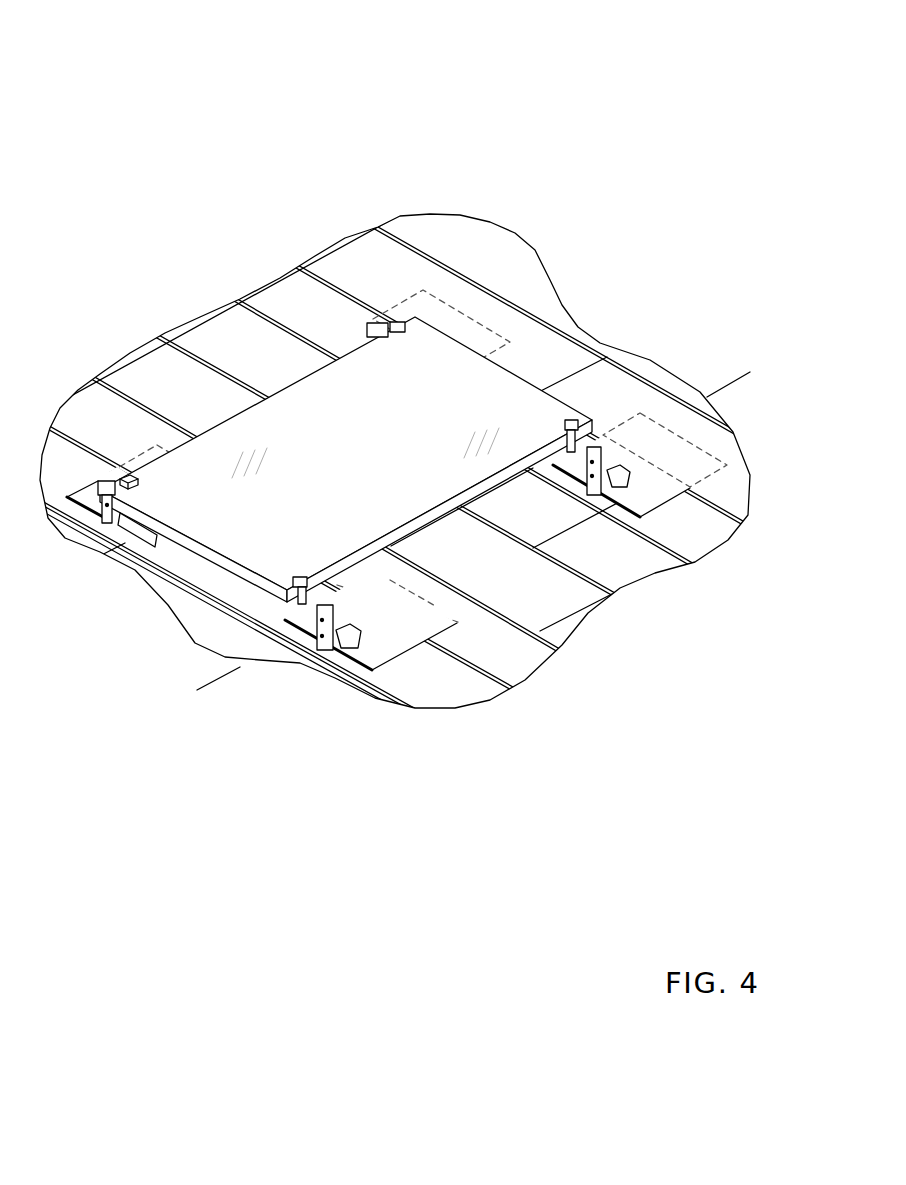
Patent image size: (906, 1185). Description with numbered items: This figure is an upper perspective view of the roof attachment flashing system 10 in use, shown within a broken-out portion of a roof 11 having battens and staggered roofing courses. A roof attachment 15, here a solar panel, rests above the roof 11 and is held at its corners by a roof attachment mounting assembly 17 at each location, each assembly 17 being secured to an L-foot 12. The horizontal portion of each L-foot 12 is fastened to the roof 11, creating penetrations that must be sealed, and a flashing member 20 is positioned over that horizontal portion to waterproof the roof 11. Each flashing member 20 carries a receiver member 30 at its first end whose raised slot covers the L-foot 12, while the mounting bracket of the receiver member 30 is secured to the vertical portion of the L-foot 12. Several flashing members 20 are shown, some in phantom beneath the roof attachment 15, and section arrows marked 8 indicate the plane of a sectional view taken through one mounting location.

The roof attachment flashing system 10 is at (168, 78).
The roof 11 is at (230, 343).
The L-foot 12 is at (110, 515).
The roof attachment 15 is at (310, 503).
The roof attachment mounting assembly 17 is at (390, 322).
The flashing member 20 is at (480, 318).
The receiver member 30 is at (350, 640).
The section line 8 is at (745, 396).